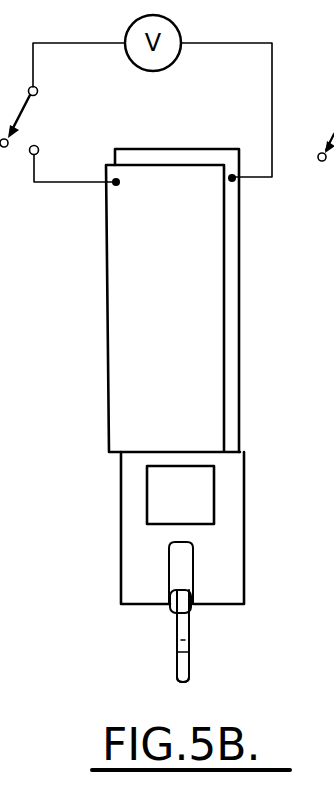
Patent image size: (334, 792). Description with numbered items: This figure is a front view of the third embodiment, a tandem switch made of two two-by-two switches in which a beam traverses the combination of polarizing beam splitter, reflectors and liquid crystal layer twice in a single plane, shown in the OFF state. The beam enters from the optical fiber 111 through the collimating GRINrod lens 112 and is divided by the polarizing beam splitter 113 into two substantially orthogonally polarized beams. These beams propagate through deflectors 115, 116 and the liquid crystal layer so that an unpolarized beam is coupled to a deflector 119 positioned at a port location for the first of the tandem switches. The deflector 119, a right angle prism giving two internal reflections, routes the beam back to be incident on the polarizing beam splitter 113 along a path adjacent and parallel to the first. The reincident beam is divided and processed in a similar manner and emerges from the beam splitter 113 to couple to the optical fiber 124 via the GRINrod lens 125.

The optical fiber 111 is at (177, 666).
The collimating GRINrod lens 112 is at (170, 611).
The polarizing beam splitter 113 is at (232, 497).
The deflector 115 is at (236, 320).
The deflector 116 is at (118, 322).
The deflector 119 is at (157, 493).
The optical fiber 124 is at (190, 642).
The GRINrod lens 125 is at (193, 568).